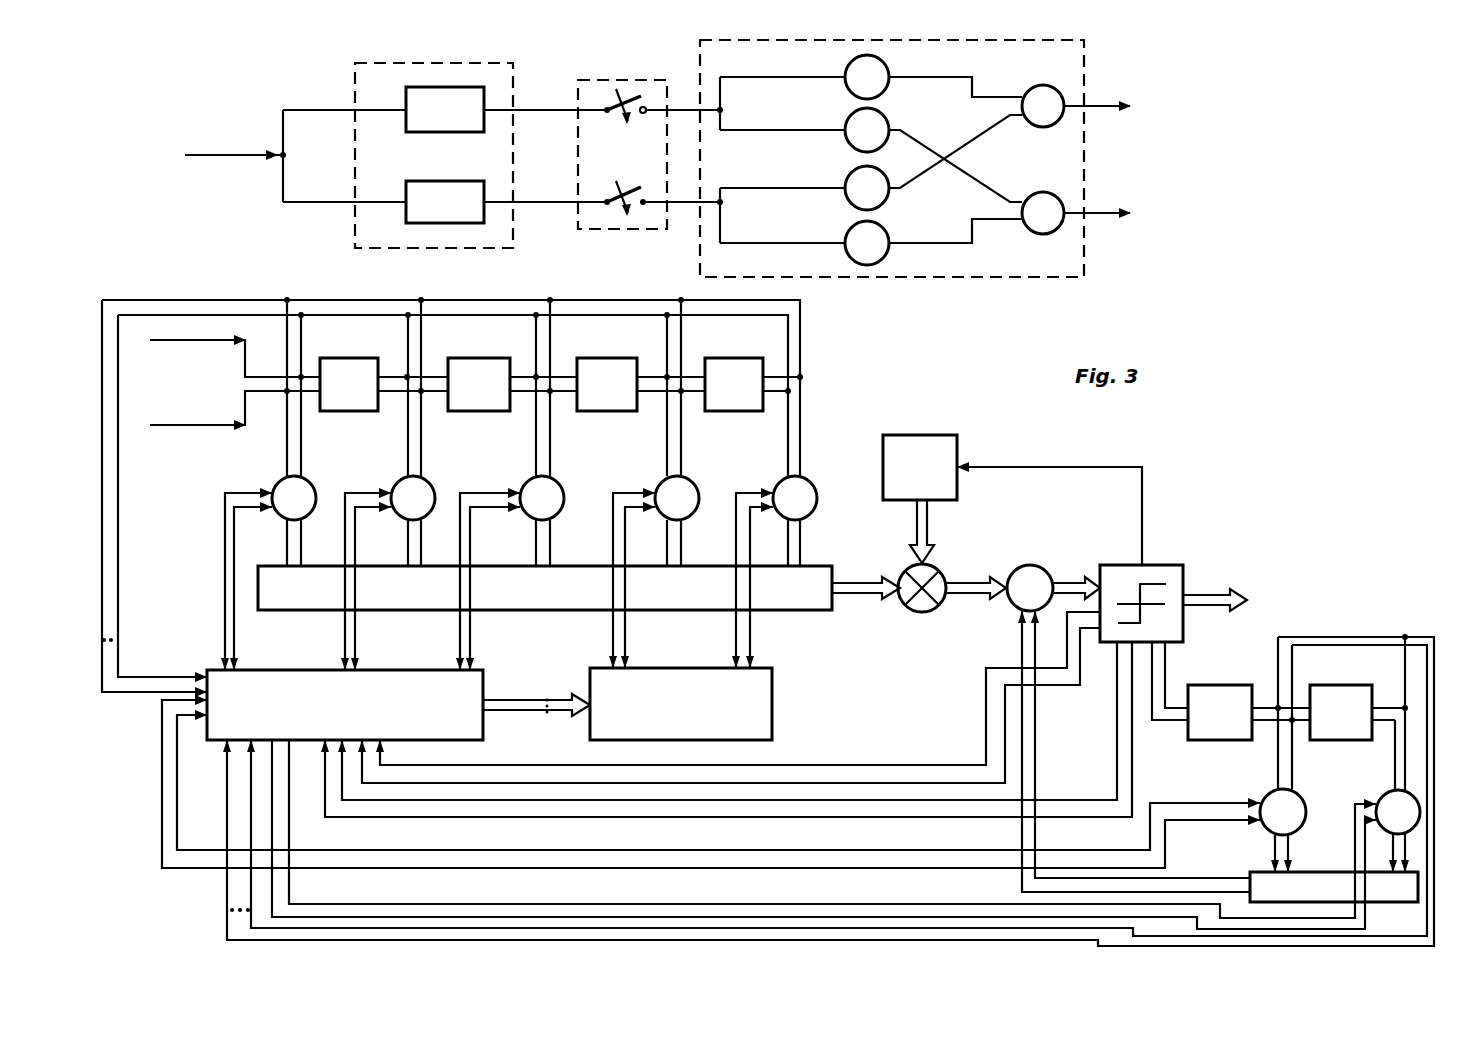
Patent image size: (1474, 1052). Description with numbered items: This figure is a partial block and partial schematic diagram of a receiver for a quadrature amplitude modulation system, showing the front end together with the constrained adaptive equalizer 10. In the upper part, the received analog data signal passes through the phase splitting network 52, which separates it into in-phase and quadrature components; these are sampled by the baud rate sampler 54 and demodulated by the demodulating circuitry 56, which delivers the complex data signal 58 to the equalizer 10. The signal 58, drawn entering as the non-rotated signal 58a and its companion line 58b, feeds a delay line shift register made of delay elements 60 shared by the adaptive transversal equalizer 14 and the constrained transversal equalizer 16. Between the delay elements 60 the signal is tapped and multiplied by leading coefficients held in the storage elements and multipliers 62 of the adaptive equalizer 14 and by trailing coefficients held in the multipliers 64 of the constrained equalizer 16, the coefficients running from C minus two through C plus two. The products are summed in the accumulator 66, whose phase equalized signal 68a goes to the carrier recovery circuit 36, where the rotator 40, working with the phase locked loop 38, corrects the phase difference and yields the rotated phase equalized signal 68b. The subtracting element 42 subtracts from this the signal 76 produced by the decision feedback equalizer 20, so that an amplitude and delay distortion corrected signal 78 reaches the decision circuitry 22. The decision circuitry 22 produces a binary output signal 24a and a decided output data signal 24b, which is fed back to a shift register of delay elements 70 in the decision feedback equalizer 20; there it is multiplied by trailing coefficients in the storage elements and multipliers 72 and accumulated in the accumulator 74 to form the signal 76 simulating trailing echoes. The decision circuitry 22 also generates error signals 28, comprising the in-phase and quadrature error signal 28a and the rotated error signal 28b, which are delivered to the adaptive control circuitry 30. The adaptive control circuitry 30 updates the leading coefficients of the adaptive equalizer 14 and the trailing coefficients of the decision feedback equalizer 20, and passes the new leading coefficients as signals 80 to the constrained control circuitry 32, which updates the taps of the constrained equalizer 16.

The constrained adaptive equalizer 10 is at (1166, 503).
The adaptive transversal equalizer 14 is at (492, 461).
The constrained transversal equalizer 16 is at (752, 443).
The decision feedback equalizer 20 is at (1385, 706).
The decision circuitry 22 is at (1172, 562).
The binary output signal 24a is at (1213, 592).
The output data signal 24b is at (1167, 673).
The error signals 28 is at (800, 841).
The error signals 28a is at (835, 779).
The rotated in-phase and quadrature error signal 28b is at (910, 813).
The adaptive control circuitry 30 is at (385, 668).
The constrained control circuitry 32 is at (775, 672).
The carrier recovery circuit 36 is at (1024, 503).
The phase locked loop 38 is at (938, 432).
The rotator 40 is at (902, 609).
The subtracting element 42 is at (1040, 565).
The phase splitting network 52 is at (455, 63).
The baud rate sampler 54 is at (628, 77).
The demodulating circuitry 56 is at (1086, 74).
The complex data signal 58 is at (213, 158).
The non-rotated signal 58a is at (302, 358).
The quadrature sample line 58b is at (422, 358).
The delay elements 60 is at (360, 358).
The multiplier circuits 62 is at (312, 480).
The multipliers 64 is at (695, 485).
The accumulator 66 is at (512, 613).
The phase equalized signal 68a is at (853, 581).
The rotated phase equalized signal 68b is at (965, 583).
The delay elements 70 is at (1258, 690).
The storage elements with multipliers 72 is at (1298, 792).
The accumulator 74 is at (1392, 905).
The signal 76 is at (1178, 888).
The equalized signal 78 is at (1068, 582).
The signals 80 is at (522, 700).